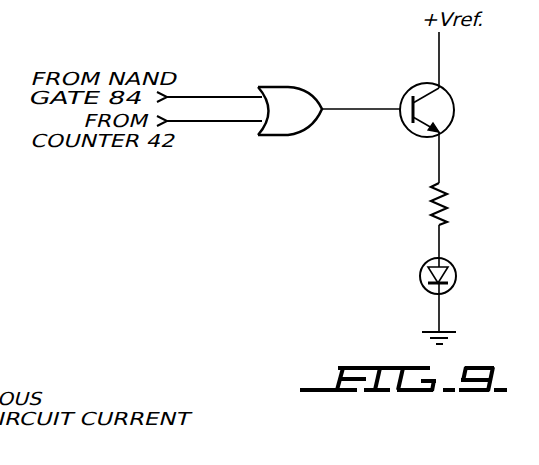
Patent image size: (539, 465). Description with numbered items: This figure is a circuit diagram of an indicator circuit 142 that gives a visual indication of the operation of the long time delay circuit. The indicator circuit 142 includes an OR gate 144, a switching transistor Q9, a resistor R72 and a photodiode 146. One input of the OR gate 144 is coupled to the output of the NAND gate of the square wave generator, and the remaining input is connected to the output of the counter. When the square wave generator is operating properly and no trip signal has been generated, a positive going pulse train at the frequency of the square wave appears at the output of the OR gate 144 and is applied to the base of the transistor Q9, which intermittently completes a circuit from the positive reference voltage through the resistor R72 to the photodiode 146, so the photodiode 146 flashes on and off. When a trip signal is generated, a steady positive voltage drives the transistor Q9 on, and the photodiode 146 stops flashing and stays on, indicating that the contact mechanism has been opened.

The OR gate 144 is at (292, 86).
The indicator circuit 142 is at (362, 181).
The switching transistor Q9 is at (454, 109).
The resistor R72 is at (444, 213).
The photodiode 146 is at (458, 280).